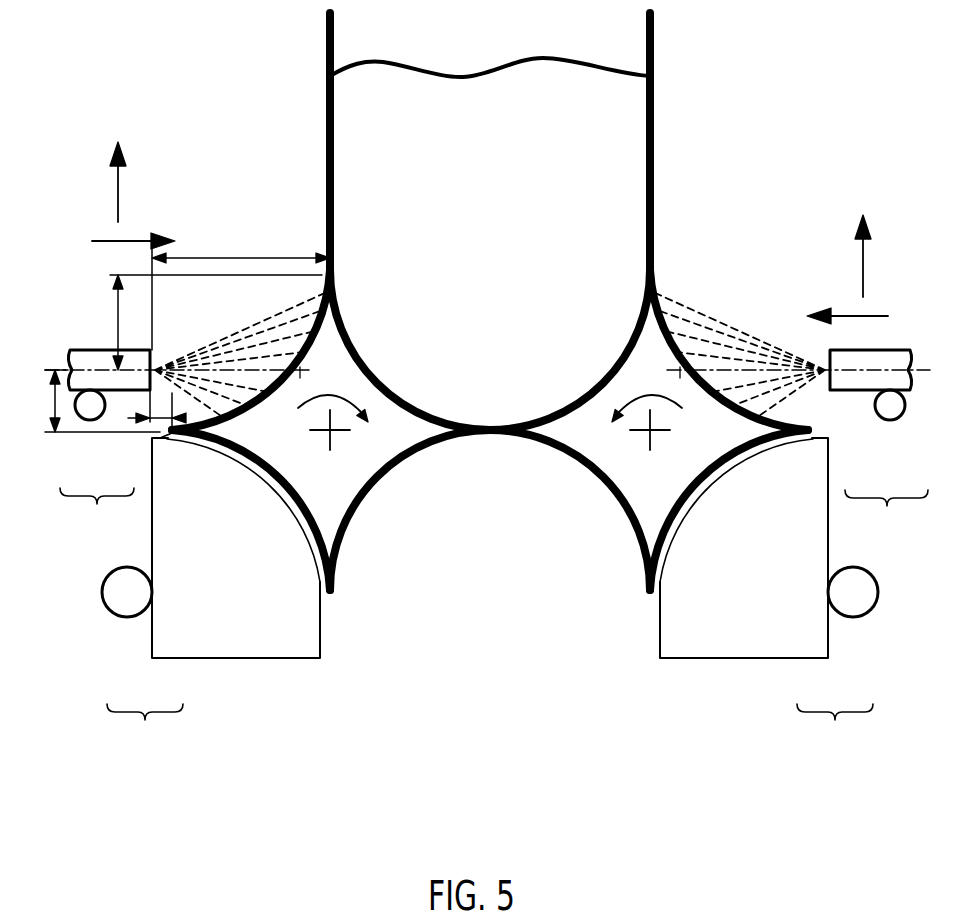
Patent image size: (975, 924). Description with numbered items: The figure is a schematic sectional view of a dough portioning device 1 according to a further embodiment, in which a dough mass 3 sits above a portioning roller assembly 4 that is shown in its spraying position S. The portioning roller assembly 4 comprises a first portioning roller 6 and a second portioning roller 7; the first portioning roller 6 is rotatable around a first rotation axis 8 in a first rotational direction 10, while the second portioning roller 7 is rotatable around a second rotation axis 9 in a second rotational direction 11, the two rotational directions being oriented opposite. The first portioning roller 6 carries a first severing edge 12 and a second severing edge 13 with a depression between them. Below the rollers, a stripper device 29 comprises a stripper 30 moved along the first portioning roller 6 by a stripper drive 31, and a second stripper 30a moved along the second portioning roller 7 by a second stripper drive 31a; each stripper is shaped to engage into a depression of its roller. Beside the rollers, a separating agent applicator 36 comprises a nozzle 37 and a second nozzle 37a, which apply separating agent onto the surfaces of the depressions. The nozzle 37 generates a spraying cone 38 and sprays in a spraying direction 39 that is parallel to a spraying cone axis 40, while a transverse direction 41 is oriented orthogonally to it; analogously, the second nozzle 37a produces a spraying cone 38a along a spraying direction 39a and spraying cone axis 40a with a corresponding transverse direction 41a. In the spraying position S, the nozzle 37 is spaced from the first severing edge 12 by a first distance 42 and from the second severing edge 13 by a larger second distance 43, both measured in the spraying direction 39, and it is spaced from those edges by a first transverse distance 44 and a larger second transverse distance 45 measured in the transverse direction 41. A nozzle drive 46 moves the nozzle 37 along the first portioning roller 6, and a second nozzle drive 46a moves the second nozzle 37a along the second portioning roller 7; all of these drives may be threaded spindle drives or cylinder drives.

The dough portioning device 1 is at (258, 56).
The dough mass 3 is at (497, 152).
The spraying position S is at (496, 338).
The portioning roller assembly 4 is at (431, 679).
The first portioning roller 6 is at (392, 478).
The second portioning roller 7 is at (588, 478).
The first rotation axis 8 is at (330, 448).
The second rotation axis 9 is at (650, 448).
The first rotational direction 10 is at (324, 393).
The second rotational direction 11 is at (660, 392).
The first severing edge 12 is at (180, 444).
The second severing edge 13 is at (334, 271).
The stripper device 29 is at (490, 728).
The stripper 30 is at (169, 648).
The second stripper 30a is at (816, 648).
The stripper drive 31 is at (124, 606).
The second stripper drive 31a is at (856, 606).
The separating agent applicator 36 is at (494, 515).
The nozzle 37 is at (114, 382).
The second nozzle 37a is at (866, 382).
The spraying cone 38 is at (192, 330).
The spraying cone 38a is at (766, 322).
The spraying direction 39 is at (104, 241).
The spraying direction 39a is at (877, 316).
The spraying cone axis 40 is at (300, 378).
The spraying cone axis 40a is at (680, 378).
The transverse direction 41 is at (118, 178).
The transverse direction 41a is at (863, 252).
The first distance 42 is at (163, 440).
The second distance 43 is at (240, 258).
The first transverse distance 44 is at (55, 398).
The second transverse distance 45 is at (118, 320).
The nozzle drive 46 is at (86, 412).
The second nozzle drive 46a is at (895, 412).